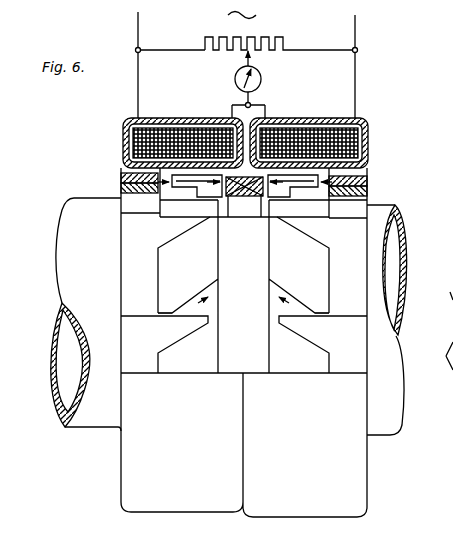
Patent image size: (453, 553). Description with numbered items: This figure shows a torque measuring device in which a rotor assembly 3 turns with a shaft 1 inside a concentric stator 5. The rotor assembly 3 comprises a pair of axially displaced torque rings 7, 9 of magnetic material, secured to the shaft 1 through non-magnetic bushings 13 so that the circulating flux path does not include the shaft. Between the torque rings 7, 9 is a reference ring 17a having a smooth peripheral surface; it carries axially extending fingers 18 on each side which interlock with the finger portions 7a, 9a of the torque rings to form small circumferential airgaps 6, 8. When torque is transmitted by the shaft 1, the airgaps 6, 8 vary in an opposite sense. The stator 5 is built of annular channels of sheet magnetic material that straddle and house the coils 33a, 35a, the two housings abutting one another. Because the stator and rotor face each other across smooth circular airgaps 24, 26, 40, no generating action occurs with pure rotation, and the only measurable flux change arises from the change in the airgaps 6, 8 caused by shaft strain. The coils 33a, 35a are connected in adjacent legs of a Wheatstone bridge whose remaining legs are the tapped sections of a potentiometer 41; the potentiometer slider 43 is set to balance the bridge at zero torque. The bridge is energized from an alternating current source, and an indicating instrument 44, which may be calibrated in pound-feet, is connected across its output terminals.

The shaft 1 is at (406, 261).
The rotor assembly 3 is at (353, 280).
The stator 5 is at (248, 136).
The circumferential airgap 6 is at (325, 316).
The torque ring 7 is at (360, 181).
The circumferential airgap 8 is at (160, 316).
The torque ring 9 is at (132, 178).
The bushing 13 is at (128, 188).
The reference ring 17a is at (224, 249).
The fingers 18 is at (200, 188).
The circular airgap 24 is at (142, 172).
The circular airgap 26 is at (352, 174).
The coil 33a is at (164, 132).
The coil 35a is at (330, 138).
The circular airgap 40 is at (244, 196).
The potentiometer 41 is at (272, 51).
The potentiometer slider 43 is at (246, 52).
The indicating instrument 44 is at (235, 79).
The finger portion 7a is at (305, 226).
The finger portion 9a is at (170, 224).